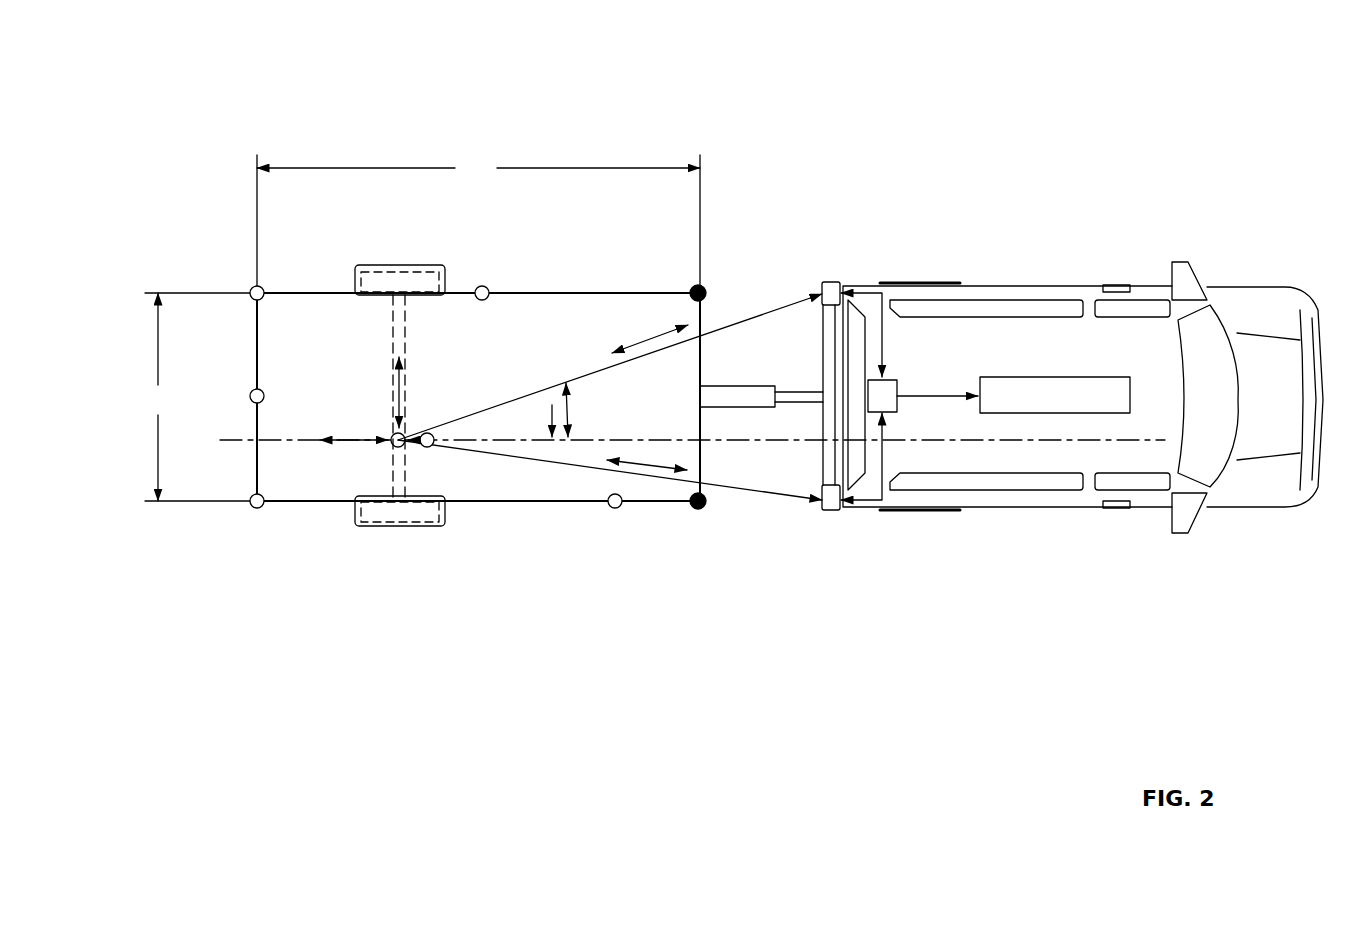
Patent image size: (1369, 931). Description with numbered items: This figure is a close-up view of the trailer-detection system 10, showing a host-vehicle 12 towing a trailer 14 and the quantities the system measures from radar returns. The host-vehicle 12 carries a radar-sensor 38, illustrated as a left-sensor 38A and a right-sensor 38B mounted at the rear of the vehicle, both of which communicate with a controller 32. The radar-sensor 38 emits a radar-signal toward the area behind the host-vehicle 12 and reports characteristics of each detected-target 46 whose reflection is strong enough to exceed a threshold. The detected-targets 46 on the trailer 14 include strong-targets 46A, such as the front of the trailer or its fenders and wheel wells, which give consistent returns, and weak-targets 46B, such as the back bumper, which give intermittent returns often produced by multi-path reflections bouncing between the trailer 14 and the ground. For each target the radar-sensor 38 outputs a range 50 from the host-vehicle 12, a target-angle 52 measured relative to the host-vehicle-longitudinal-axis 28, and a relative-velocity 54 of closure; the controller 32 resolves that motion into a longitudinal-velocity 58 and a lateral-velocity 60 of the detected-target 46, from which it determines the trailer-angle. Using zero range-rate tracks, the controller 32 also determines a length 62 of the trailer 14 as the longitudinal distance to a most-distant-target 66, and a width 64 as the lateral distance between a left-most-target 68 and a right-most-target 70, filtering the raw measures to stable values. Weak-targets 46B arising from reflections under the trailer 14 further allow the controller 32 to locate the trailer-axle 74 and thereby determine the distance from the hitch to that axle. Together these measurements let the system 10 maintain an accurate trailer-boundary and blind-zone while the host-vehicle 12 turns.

The trailer-detection system 10 is at (1170, 82).
The host-vehicle 12 is at (1293, 297).
The trailer 14 is at (300, 505).
The host-vehicle-longitudinal-axis 28 is at (1002, 450).
The controller 32 is at (1027, 377).
The radar-sensor 38 is at (887, 386).
The left-sensor 38A is at (822, 285).
The right-sensor 38B is at (822, 510).
The detected-targets 46 is at (394, 451).
The strong-targets 46A is at (705, 290).
The weak-targets 46B is at (252, 290).
The range 50 is at (500, 455).
The target-angle 52 is at (573, 408).
The relative-velocity 54 is at (633, 463).
The longitudinal-velocity 58 is at (345, 432).
The lateral-velocity 60 is at (401, 392).
The length 62 is at (478, 168).
The width 64 is at (156, 397).
The most-distant-target 66 is at (253, 392).
The left-most-target 68 is at (487, 289).
The right-most-target 70 is at (612, 510).
The trailer-axle 74 is at (392, 337).